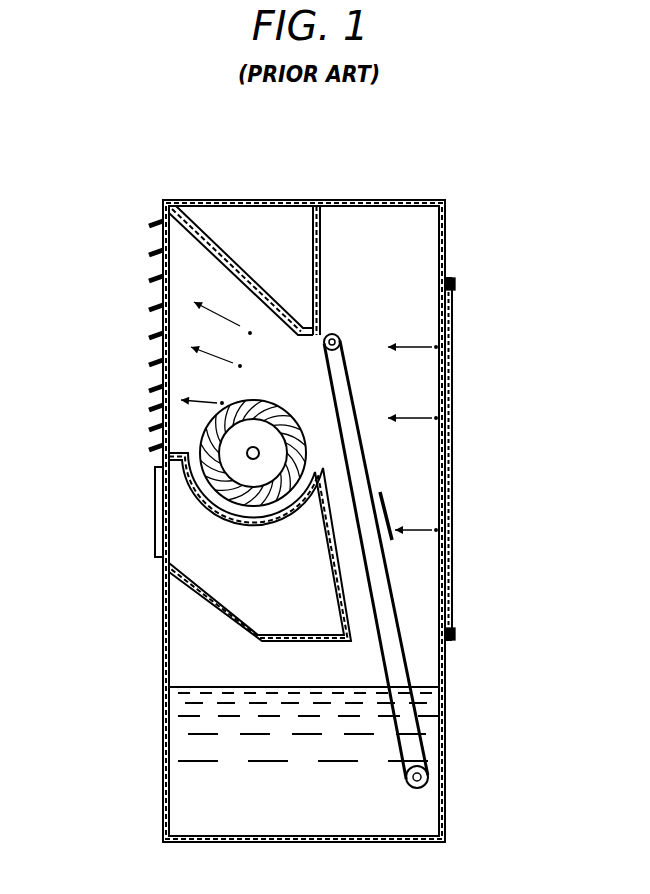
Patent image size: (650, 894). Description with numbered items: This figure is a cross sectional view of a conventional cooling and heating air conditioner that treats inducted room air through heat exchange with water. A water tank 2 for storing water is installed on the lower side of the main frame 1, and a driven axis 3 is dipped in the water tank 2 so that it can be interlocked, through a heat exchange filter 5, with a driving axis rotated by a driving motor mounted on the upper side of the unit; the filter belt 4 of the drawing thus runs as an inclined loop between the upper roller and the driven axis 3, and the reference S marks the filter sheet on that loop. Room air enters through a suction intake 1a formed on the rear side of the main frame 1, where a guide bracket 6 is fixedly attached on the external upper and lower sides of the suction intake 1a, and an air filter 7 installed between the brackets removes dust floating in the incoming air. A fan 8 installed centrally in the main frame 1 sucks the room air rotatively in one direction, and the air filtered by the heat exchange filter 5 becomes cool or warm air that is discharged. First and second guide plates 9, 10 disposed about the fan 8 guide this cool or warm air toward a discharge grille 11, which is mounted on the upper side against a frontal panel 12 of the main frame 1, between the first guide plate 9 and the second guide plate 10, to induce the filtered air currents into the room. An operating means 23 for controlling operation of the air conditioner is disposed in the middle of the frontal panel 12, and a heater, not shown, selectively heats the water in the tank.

The main frame 1 is at (448, 222).
The suction intake 1a is at (437, 303).
The water tank 2 is at (168, 740).
The driven axis 3 is at (428, 778).
The filter belt 4 is at (333, 334).
The heat exchange filter 5 is at (443, 674).
The guide bracket 6 is at (456, 287).
The air filter 7 is at (447, 537).
The fan 8 is at (203, 440).
The first guide plate 9 is at (263, 228).
The second guide plate 10 is at (190, 560).
The discharge grille 11 is at (152, 362).
The frontal panel 12 is at (165, 652).
The operating means 23 is at (155, 510).
The filter sheet S is at (395, 544).